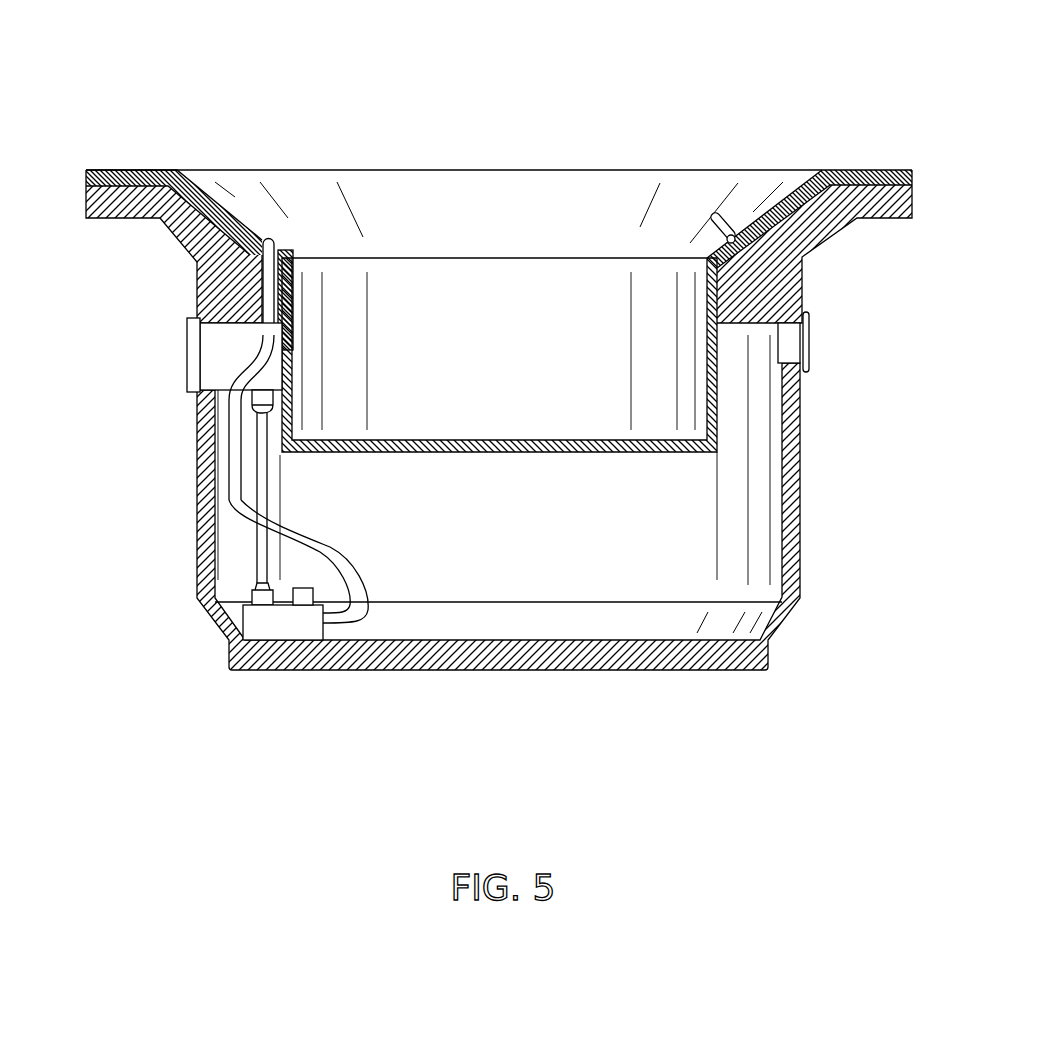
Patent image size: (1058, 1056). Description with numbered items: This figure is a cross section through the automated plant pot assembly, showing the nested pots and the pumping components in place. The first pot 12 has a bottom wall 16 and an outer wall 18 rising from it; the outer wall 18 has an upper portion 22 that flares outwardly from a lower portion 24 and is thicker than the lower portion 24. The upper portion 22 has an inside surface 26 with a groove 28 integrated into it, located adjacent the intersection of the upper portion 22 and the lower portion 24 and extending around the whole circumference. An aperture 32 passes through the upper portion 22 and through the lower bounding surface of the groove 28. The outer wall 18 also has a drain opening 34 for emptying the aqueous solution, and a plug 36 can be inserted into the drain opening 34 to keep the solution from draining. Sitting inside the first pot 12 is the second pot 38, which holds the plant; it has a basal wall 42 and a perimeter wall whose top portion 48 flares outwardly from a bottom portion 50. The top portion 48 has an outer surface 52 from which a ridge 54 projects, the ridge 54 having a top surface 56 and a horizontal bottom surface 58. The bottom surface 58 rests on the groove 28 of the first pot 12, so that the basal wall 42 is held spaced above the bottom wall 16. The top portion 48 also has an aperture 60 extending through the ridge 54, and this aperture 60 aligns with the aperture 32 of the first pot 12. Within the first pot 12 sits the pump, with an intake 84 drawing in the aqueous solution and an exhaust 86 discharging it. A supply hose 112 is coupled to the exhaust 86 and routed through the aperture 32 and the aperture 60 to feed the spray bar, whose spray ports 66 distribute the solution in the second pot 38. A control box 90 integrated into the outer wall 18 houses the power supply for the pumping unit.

The first pot 12 is at (508, 549).
The bottom wall 16 is at (720, 670).
The outer wall 18 is at (800, 520).
The upper portion 22 is at (825, 247).
The lower portion 24 is at (808, 437).
The inside surface 26 is at (731, 238).
The groove 28 is at (707, 257).
The aperture 32 is at (499, 395).
The drain opening 34 is at (808, 352).
The plug 36 is at (808, 322).
The second pot 38 is at (93, 170).
The basal wall 42 is at (610, 452).
The top portion 48 is at (225, 186).
The bottom portion 50 is at (282, 425).
The outer surface 52 is at (190, 262).
The ridge 54 is at (244, 285).
The top surface 56 is at (265, 240).
The bottom surface 58 is at (280, 322).
The aperture 60 is at (283, 255).
The spray ports 66 is at (712, 218).
The intake 84 is at (297, 590).
The exhaust 86 is at (360, 645).
The control box 90 is at (292, 357).
The supply hose 112 is at (375, 586).